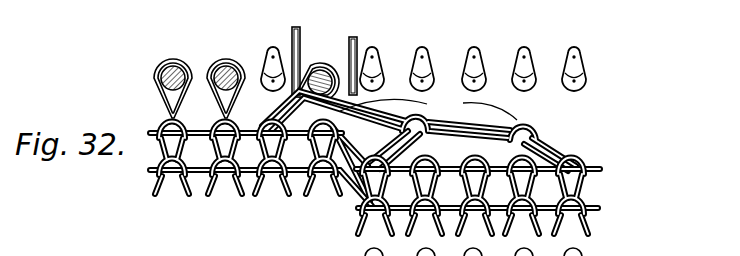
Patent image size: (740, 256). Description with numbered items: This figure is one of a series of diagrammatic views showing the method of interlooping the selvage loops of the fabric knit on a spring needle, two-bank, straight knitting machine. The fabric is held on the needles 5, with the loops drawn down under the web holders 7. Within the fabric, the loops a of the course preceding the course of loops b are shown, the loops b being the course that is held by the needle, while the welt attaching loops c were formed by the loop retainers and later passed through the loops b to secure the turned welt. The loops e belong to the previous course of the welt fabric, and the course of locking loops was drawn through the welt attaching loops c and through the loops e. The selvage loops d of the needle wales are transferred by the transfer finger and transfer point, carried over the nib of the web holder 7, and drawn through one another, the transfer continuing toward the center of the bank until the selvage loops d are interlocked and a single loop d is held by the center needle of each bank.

The needles 5 is at (527, 88).
The web holders 7 is at (349, 47).
The loops a is at (261, 192).
The loops b is at (447, 222).
The welt attaching loops c is at (247, 158).
The selvage loops d is at (230, 66).
The loops e is at (246, 114).